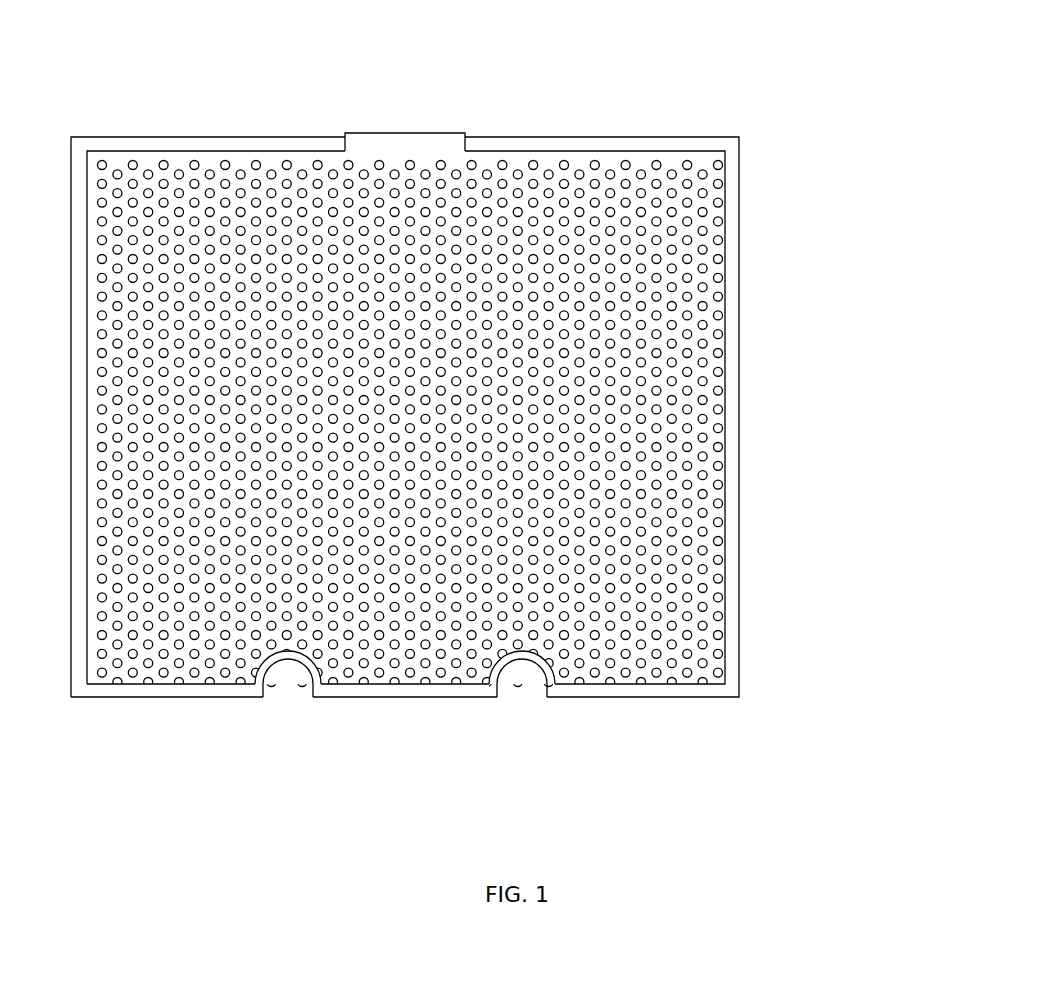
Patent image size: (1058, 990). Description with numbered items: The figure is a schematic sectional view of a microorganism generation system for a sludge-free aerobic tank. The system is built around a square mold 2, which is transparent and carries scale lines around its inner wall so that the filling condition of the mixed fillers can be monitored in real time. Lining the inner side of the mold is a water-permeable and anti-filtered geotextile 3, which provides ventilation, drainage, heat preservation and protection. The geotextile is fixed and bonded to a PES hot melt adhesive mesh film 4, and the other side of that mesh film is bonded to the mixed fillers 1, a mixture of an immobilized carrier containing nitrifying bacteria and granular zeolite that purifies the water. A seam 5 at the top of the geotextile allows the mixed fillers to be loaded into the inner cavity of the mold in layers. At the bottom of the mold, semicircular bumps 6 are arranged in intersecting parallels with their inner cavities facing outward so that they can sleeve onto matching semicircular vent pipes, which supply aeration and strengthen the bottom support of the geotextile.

The mixed filler 1 is at (476, 422).
The mold 2 is at (490, 417).
The water-permeable and anti-filtered geotextile 3 is at (469, 377).
The PES hot melt adhesive mesh film 4 is at (413, 343).
The seam 5 is at (254, 85).
The semicircular bump 6 is at (366, 748).